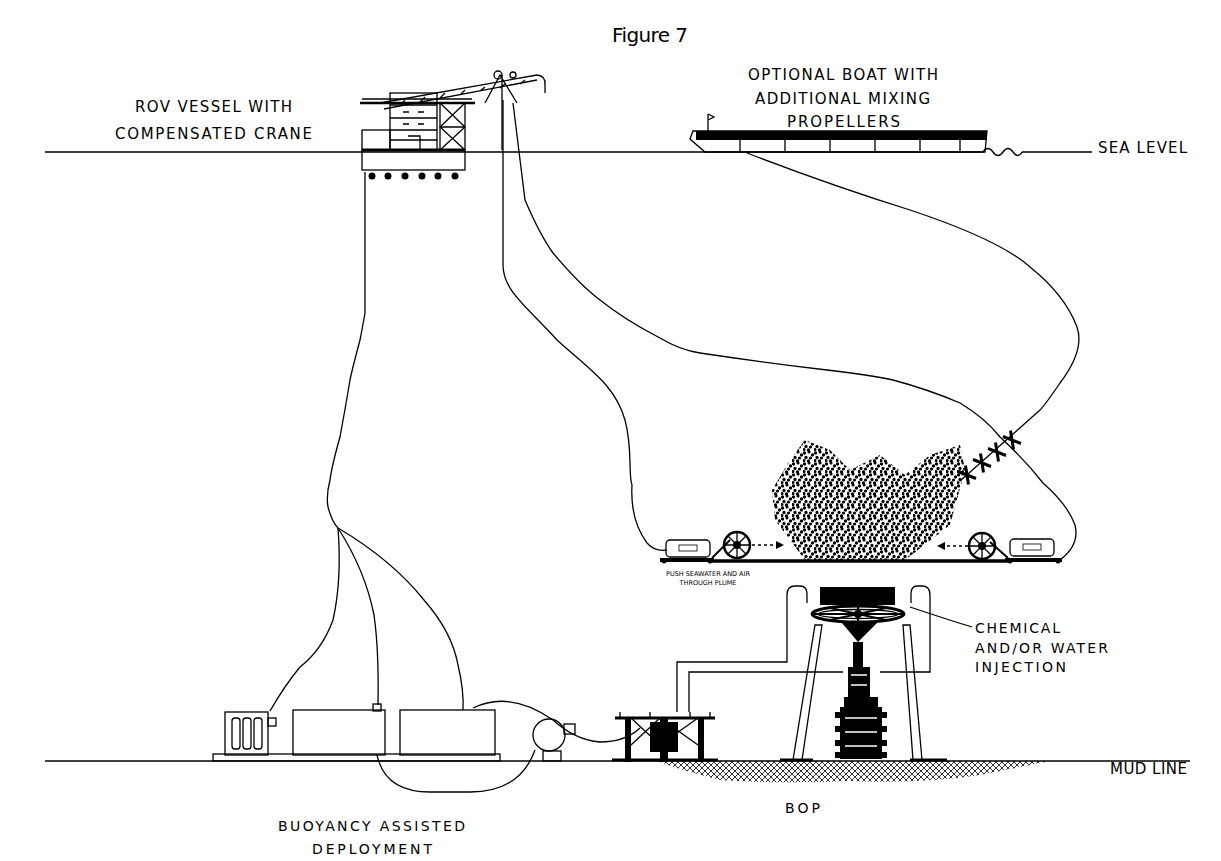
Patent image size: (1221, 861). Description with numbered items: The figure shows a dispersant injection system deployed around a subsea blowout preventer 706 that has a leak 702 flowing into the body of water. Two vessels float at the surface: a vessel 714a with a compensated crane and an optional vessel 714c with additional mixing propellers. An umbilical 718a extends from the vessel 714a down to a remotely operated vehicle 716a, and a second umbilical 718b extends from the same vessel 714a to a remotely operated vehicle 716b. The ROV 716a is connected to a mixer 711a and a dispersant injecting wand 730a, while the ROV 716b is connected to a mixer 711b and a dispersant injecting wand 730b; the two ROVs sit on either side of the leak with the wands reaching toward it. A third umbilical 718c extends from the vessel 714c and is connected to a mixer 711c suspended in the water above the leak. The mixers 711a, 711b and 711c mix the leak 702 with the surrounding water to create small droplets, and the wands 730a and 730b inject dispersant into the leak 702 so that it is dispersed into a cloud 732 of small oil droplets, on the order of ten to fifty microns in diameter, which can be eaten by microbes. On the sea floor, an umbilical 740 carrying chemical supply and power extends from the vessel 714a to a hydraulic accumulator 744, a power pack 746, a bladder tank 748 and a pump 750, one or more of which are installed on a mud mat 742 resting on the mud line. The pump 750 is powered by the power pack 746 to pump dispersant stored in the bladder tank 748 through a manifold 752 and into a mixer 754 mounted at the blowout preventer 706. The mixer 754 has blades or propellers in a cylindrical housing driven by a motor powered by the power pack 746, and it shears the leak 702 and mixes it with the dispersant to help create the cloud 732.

The vessel 714a is at (363, 157).
The vessel 714c is at (912, 154).
The umbilical 718a is at (502, 262).
The umbilical 718b is at (555, 253).
The umbilical 718c is at (1079, 328).
The mixer 711a is at (740, 533).
The mixer 711b is at (985, 535).
The mixer 711c is at (1012, 450).
The remotely operated vehicle 716a is at (668, 556).
The remotely operated vehicle 716b is at (1057, 560).
The dispersant injecting wand 730a is at (792, 564).
The dispersant injecting wand 730b is at (952, 564).
The cloud 732 is at (894, 465).
The umbilical 740 is at (339, 425).
The mud mat 742 is at (328, 768).
The hydraulic accumulator 744 is at (217, 698).
The power pack 746 is at (330, 710).
The bladder tank 748 is at (467, 709).
The pump 750 is at (477, 761).
The manifold 752 is at (595, 758).
The leak 702 is at (870, 643).
The mixer 754 is at (903, 630).
The subsea blowout preventer 706 is at (858, 772).